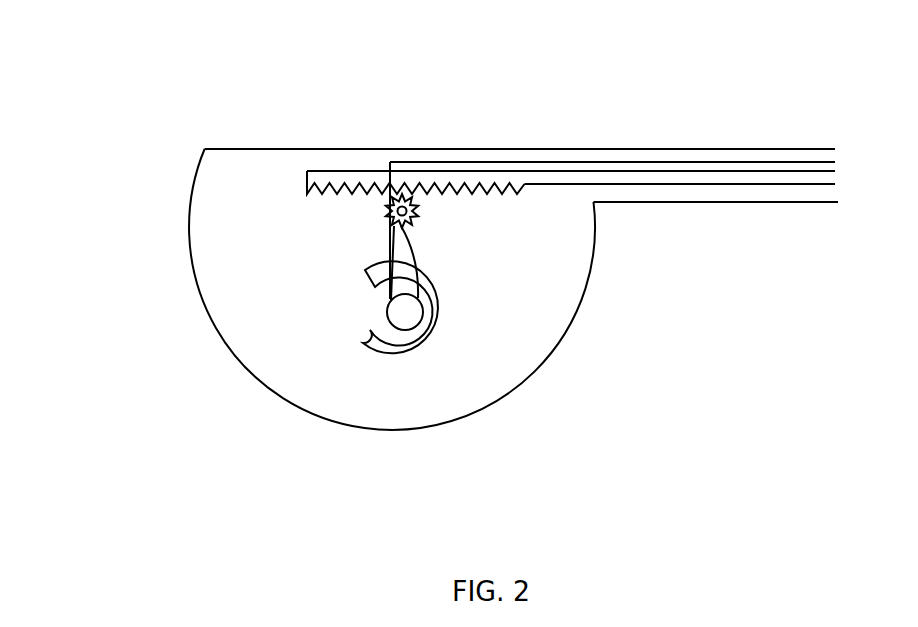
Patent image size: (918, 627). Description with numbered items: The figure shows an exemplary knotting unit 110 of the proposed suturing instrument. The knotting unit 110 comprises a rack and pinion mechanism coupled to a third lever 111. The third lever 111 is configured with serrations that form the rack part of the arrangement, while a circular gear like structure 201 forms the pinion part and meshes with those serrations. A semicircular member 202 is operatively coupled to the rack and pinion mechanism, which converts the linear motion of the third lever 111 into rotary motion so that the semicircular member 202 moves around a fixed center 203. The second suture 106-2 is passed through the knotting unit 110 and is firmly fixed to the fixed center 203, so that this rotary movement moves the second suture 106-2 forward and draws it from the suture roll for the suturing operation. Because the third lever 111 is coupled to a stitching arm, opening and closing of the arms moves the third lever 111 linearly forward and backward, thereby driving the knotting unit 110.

The knotting unit 110 is at (127, 77).
The second suture 106-2 is at (700, 162).
The third lever 111 is at (605, 187).
The circular gear like structure 201 is at (381, 215).
The semicircular member 202 is at (412, 360).
The fixed center 203 is at (383, 320).